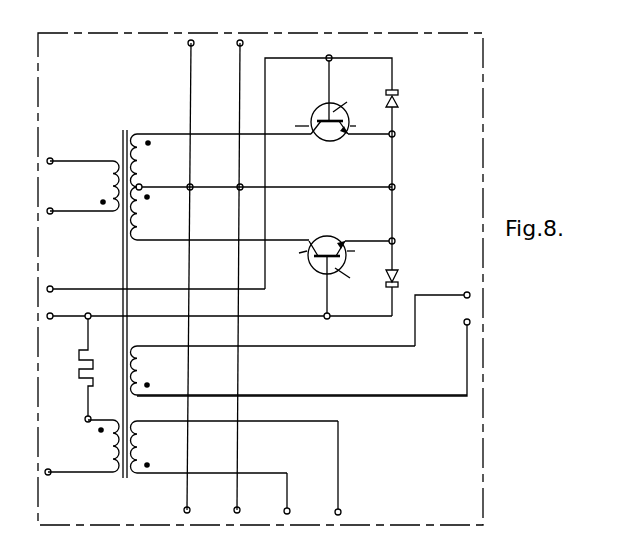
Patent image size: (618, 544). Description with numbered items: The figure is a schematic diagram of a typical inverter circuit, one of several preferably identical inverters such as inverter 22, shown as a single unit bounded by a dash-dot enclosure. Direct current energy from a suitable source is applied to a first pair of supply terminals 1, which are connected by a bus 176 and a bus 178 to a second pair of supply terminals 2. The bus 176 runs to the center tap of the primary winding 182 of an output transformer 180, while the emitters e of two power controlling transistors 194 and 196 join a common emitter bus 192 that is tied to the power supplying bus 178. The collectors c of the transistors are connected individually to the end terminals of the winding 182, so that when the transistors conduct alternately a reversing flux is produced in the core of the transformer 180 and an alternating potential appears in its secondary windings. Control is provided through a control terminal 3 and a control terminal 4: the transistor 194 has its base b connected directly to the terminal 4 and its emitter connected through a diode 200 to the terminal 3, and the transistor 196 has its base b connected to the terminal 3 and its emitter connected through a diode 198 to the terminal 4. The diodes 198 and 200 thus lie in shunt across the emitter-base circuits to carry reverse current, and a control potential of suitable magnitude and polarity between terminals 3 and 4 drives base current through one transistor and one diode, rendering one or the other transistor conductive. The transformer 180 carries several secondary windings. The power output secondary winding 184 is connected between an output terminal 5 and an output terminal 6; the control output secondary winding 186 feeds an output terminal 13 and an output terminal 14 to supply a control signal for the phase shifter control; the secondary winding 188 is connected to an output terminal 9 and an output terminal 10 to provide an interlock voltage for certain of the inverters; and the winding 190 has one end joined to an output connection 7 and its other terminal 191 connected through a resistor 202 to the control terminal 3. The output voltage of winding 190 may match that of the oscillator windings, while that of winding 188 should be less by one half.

The first pair of supply terminals 1 is at (234, 509).
The second pair of supply terminals 2 is at (229, 48).
The control terminal 3 is at (52, 313).
The control terminal 4 is at (52, 286).
The output terminal 5 is at (284, 510).
The output terminal 6 is at (335, 511).
The output connection 7 is at (48, 475).
The output terminal 9 is at (52, 158).
The output terminal 10 is at (50, 214).
The output terminal 13 is at (466, 291).
The output terminal 14 is at (464, 322).
The inverter 22 is at (484, 65).
The bus 176 is at (191, 262).
The bus 178 is at (233, 368).
The output transformer 180 is at (128, 268).
The primary winding 182 is at (141, 173).
The power output secondary winding 184 is at (138, 441).
The control output secondary winding 186 is at (138, 359).
The secondary winding 188 is at (111, 184).
The winding 190 is at (107, 456).
The terminal 191 is at (84, 419).
The common emitter bus 192 is at (394, 157).
The power controlling transistor 194 is at (312, 113).
The power controlling transistor 196 is at (312, 265).
The diode 198 is at (399, 102).
The diode 200 is at (399, 274).
The resistor 202 is at (77, 362).